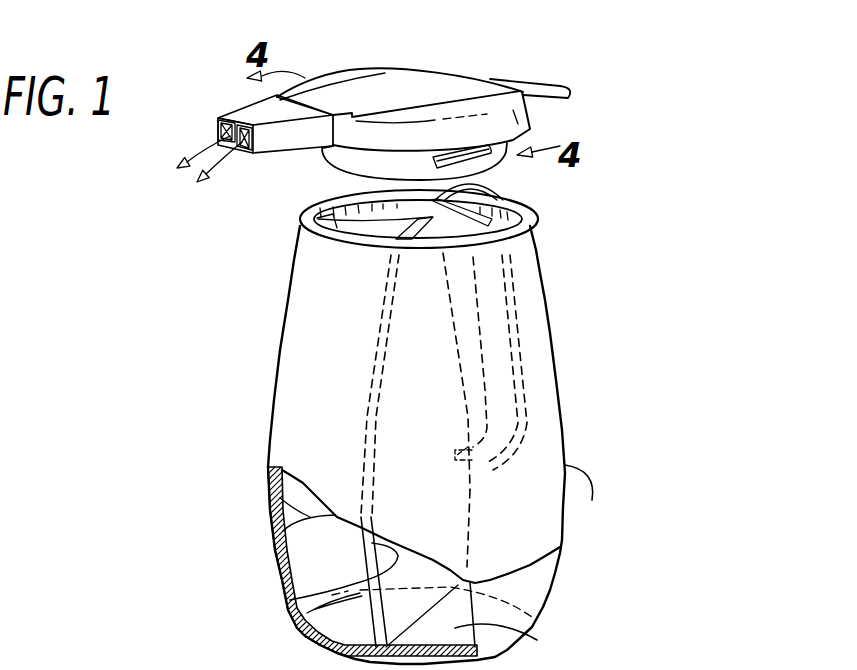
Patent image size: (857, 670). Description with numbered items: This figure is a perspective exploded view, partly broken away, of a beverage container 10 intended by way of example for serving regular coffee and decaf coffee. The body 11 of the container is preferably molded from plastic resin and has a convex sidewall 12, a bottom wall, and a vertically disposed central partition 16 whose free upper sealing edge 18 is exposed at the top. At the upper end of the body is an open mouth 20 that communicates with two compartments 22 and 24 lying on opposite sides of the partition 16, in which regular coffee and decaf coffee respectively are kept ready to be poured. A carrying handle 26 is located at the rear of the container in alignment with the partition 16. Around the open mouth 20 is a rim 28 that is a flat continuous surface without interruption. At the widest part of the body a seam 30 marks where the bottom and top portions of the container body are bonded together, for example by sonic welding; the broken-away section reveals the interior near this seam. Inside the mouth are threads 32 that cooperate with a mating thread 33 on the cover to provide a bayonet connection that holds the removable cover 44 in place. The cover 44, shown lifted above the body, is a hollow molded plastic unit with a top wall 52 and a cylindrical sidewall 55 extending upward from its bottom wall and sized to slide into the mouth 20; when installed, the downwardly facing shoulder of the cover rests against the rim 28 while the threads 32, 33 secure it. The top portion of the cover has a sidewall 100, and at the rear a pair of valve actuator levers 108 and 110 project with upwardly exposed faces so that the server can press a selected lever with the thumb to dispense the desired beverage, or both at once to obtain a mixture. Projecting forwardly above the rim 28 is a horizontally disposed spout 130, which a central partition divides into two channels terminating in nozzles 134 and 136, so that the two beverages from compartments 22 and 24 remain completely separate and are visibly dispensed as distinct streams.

The beverage container 10 is at (304, 346).
The body 11 is at (584, 498).
The convex sidewall 12 is at (557, 430).
The central partition 16 is at (307, 597).
The free upper sealing edge 18 is at (430, 236).
The open mouth 20 is at (317, 206).
The compartment 22 is at (310, 560).
The compartment 24 is at (497, 630).
The carrying handle 26 is at (519, 330).
The rim 28 is at (532, 218).
The seam 30 is at (280, 497).
The threads 32 is at (470, 245).
The mating thread 33 is at (490, 160).
The removable cover 44 is at (350, 75).
The top wall 52 is at (388, 78).
The cylindrical sidewall 55 is at (367, 163).
The sidewall 100 is at (412, 135).
The left valve actuator lever 108 is at (598, 102).
The right valve actuator lever 110 is at (508, 78).
The spout 130 is at (245, 108).
The nozzle 134 is at (218, 118).
The nozzle 136 is at (218, 128).